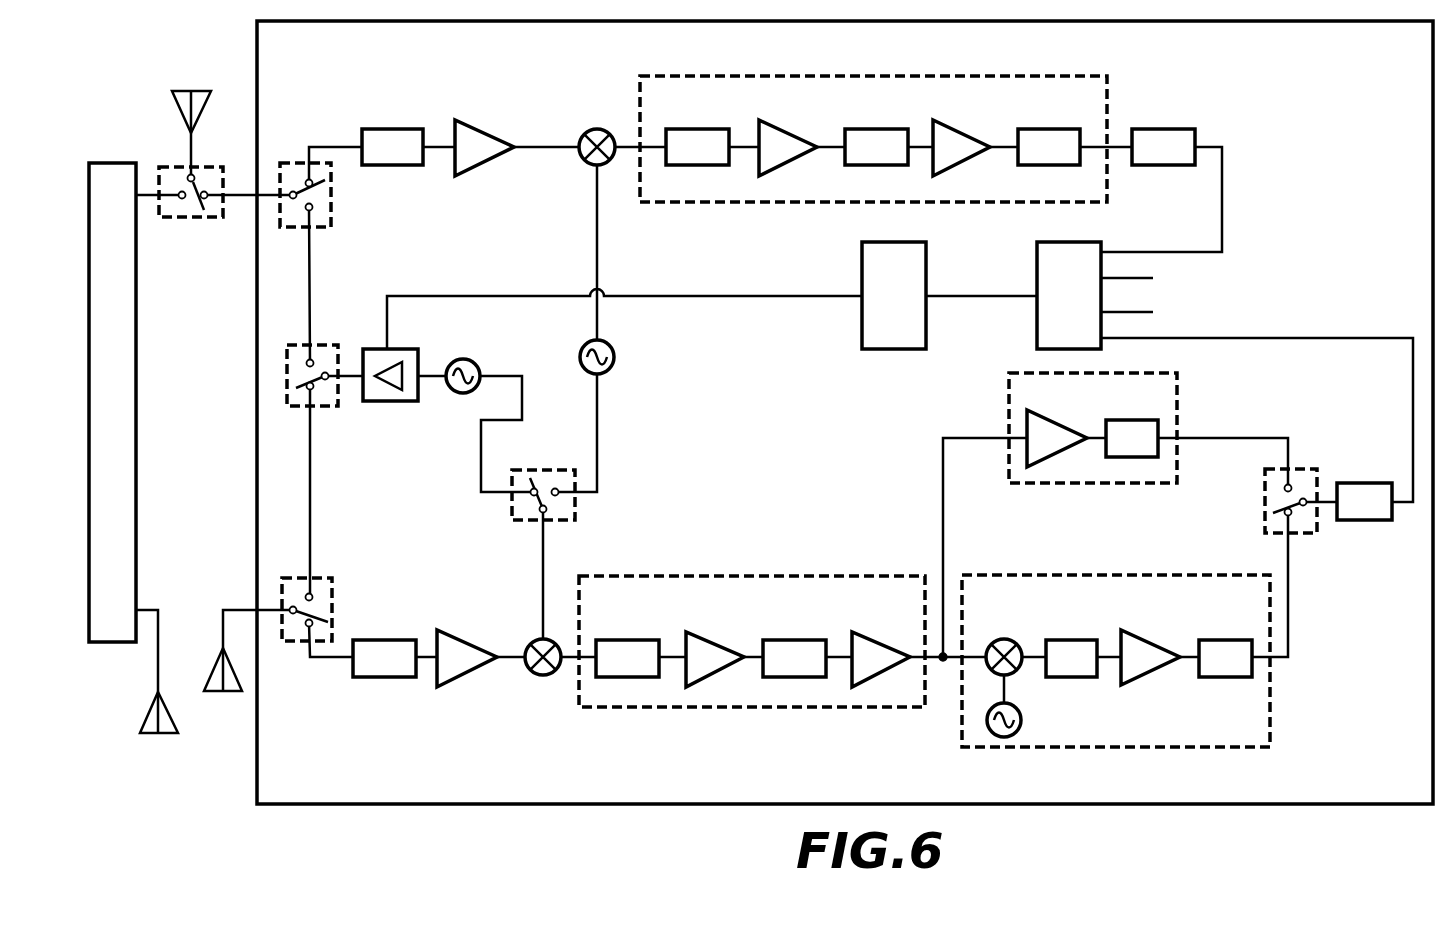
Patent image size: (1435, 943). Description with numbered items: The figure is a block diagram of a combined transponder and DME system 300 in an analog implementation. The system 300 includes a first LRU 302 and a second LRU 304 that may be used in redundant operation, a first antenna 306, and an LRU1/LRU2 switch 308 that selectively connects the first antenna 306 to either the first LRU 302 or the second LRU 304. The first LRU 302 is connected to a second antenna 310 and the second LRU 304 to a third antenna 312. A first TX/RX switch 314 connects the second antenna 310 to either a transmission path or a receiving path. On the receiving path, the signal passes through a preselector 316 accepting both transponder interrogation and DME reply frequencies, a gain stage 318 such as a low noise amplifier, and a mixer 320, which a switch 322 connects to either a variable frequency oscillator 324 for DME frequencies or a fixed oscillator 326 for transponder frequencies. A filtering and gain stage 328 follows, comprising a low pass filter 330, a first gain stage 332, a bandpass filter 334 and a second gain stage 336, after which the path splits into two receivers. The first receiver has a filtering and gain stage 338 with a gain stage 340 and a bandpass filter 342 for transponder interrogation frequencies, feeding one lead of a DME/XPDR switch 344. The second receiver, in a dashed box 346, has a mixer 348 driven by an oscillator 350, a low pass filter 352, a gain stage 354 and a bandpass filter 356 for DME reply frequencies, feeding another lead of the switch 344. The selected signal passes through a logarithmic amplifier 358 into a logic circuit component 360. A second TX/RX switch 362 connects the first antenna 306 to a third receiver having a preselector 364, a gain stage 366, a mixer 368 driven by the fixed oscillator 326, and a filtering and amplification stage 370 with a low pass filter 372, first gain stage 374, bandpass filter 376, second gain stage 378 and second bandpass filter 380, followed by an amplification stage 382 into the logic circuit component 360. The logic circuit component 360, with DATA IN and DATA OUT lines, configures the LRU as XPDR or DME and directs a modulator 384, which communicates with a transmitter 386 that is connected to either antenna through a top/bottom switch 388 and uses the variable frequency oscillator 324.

The combined transponder and DME system 300 is at (145, 23).
The first LRU 302 is at (845, 434).
The second LRU 304 is at (112, 402).
The first antenna 306 is at (166, 134).
The LRU1/LRU2 switch 308 is at (214, 211).
The second antenna 310 is at (230, 650).
The third antenna 312 is at (135, 671).
The first TX/RX switch 314 is at (335, 610).
The preselector 316 is at (395, 658).
The gain stage 318 is at (481, 658).
The mixer 320 is at (538, 670).
The switch 322 is at (576, 554).
The variable frequency oscillator 324 is at (490, 409).
The fixed oscillator 326 is at (612, 415).
The filtering and gain stage 328 is at (752, 641).
The low pass filter 330 is at (641, 658).
The first gain stage 332 is at (724, 659).
The bandpass filter 334 is at (807, 658).
The second gain stage 336 is at (939, 562).
The filtering and gain stage 338 is at (1093, 428).
The gain stage 340 is at (1066, 438).
The bandpass filter 342 is at (1197, 454).
The DME/XPDR switch 344 is at (1272, 563).
The dashed box 346 is at (1116, 661).
The mixer 348 is at (1016, 656).
The oscillator 350 is at (1034, 716).
The low pass filter 352 is at (1083, 658).
The gain stage 354 is at (1160, 657).
The bandpass filter 356 is at (1225, 658).
The logarithmic amplifier 358 is at (1364, 501).
The logic circuit component 360 is at (1225, 372).
The second TX/RX switch 362 is at (334, 255).
The preselector 364 is at (408, 147).
The gain stage 366 is at (517, 148).
The mixer 368 is at (601, 221).
The filtering and amplification stage 370 is at (873, 139).
The low pass filter 372 is at (712, 147).
The first gain stage 374 is at (802, 148).
The bandpass filter 376 is at (889, 147).
The second gain stage 378 is at (975, 148).
The second bandpass filter 380 is at (1075, 147).
The amplification stage 382 is at (1161, 190).
The modulator 384 is at (712, 295).
The transmitter 386 is at (394, 351).
The top/bottom switch 388 is at (326, 448).